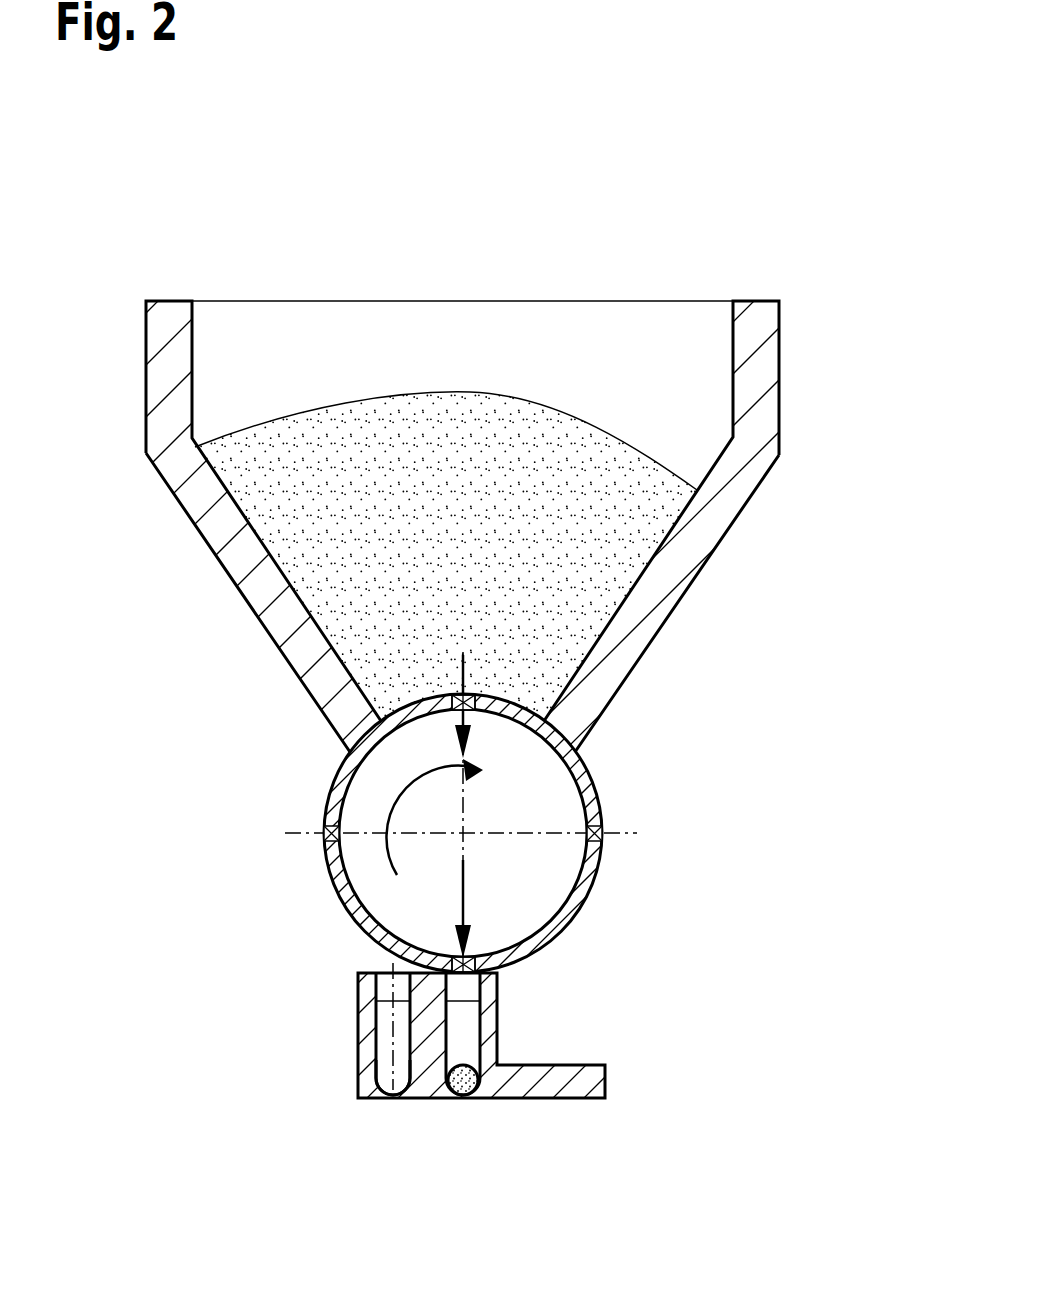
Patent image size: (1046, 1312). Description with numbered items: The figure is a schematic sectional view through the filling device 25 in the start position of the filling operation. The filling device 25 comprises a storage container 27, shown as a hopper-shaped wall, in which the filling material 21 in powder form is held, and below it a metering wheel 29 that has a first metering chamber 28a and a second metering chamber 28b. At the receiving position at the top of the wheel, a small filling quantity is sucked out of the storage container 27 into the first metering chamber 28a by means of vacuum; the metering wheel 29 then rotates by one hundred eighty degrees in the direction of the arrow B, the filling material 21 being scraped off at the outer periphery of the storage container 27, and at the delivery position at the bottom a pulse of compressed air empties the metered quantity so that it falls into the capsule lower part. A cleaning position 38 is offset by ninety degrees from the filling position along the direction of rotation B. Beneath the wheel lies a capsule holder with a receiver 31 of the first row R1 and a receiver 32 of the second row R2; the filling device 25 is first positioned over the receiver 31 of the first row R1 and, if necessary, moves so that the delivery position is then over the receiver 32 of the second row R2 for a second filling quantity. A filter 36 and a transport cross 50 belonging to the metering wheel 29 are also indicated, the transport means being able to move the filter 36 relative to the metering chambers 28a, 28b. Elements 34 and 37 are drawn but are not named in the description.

The filling device 25 is at (876, 409).
The filling material 21 is at (272, 495).
The storage container 27 is at (705, 525).
The first metering chamber 28a is at (452, 697).
The second metering chamber 28b is at (472, 962).
The metering wheel 29 is at (370, 866).
The drum wall 34 is at (350, 786).
The filter 36 is at (470, 700).
The lower seal 37 is at (455, 958).
The cleaning position 38 is at (598, 836).
The receiver 31 is at (478, 1082).
The receiver 32 is at (390, 1076).
The transport cross 50 is at (468, 1093).
The first row R1 is at (499, 1002).
The second row R2 is at (345, 1030).
The direction of rotation B is at (408, 787).